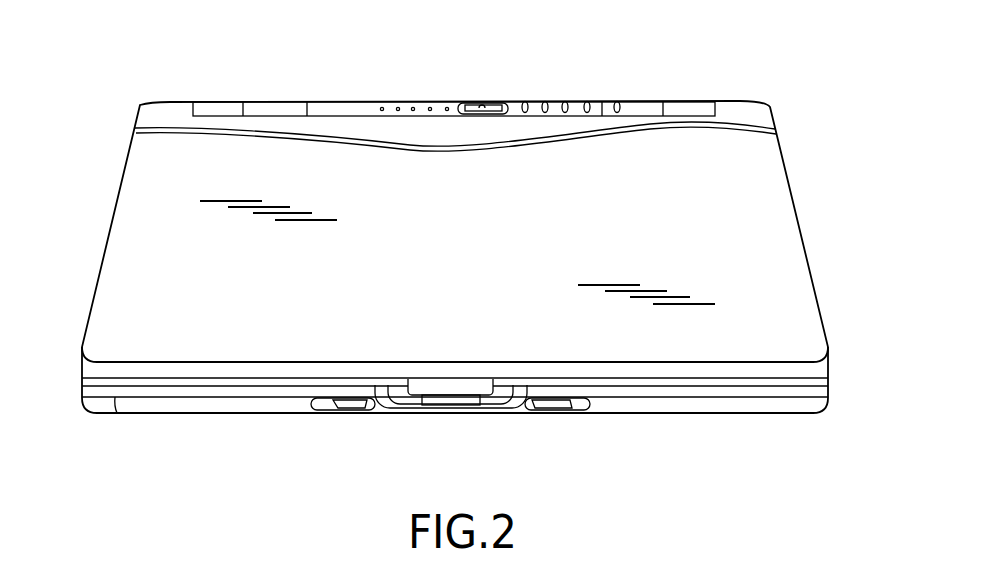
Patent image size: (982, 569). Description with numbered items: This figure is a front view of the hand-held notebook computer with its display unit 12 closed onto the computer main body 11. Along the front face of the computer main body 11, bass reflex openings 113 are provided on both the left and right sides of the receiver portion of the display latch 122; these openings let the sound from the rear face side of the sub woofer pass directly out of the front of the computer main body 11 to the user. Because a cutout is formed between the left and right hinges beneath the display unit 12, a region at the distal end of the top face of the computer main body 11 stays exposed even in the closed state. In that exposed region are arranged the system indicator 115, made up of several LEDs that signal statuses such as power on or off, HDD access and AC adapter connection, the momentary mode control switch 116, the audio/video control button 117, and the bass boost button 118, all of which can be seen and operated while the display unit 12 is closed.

The computer main body 11 is at (813, 408).
The display unit 12 is at (813, 371).
The bass reflex openings 113 is at (343, 405).
The system indicator 115 is at (431, 107).
The mode control switch 116 is at (483, 102).
The audio/video control button 117 is at (595, 92).
The bass boost button 118 is at (618, 102).
The display latch 122 is at (450, 398).